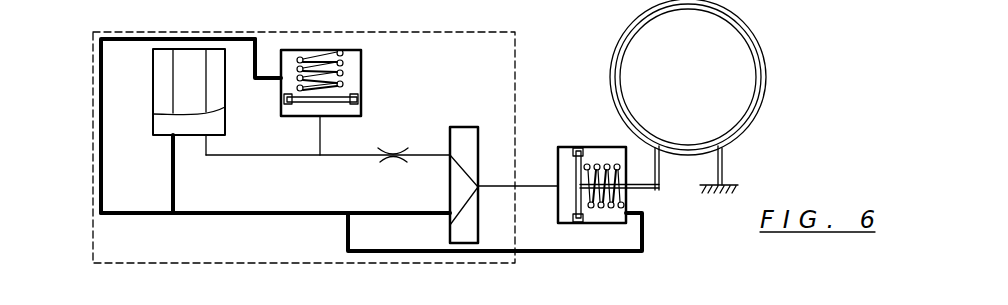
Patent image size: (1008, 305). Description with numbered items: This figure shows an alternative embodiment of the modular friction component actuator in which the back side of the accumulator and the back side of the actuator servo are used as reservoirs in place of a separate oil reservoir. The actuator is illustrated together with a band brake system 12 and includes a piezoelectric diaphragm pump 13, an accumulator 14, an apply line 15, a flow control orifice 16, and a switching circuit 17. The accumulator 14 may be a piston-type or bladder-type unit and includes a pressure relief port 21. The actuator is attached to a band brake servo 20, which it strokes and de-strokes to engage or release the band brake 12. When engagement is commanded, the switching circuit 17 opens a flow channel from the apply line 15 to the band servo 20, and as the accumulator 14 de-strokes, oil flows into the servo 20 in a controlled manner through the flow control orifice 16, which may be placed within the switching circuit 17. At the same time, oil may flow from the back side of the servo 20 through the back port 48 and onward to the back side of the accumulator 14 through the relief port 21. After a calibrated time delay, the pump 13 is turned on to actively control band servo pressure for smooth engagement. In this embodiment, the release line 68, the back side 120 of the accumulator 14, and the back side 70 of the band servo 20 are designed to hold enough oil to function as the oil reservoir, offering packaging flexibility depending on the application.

The band brake system 12 is at (617, 42).
The piezoelectric diaphragm pump 13 is at (153, 114).
The accumulator 14 is at (318, 58).
The apply line 15 is at (338, 156).
The flow control orifice 16 is at (393, 150).
The switching circuit 17 is at (465, 127).
The band brake servo 20 is at (583, 147).
The pressure relief port 21 is at (272, 80).
The back port 48 is at (638, 205).
The release line 68 is at (197, 214).
The back side of the band servo 70 is at (627, 194).
The back side of the accumulator 120 is at (292, 57).